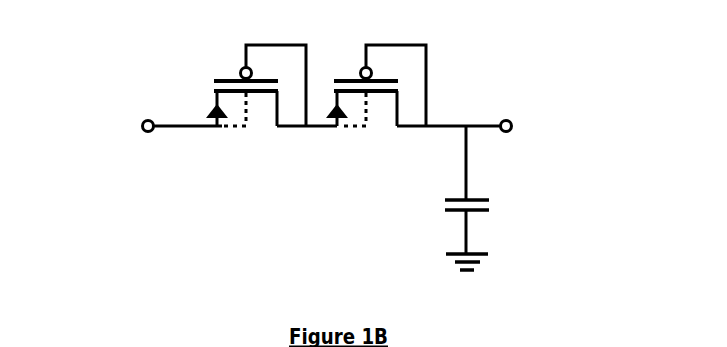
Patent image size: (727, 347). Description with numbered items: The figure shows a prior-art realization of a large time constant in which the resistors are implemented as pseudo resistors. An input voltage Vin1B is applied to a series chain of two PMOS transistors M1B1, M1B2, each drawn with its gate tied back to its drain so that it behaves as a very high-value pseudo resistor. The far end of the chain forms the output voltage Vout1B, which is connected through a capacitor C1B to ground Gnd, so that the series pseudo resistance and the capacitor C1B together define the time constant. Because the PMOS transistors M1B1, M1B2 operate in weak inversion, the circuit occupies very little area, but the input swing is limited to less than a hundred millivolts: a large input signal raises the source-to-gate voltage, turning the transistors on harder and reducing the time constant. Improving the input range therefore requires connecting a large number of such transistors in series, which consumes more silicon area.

The input voltage Vin1B is at (134, 122).
The PMOS transistor M1B1 is at (270, 107).
The PMOS transistor M1B2 is at (374, 107).
The output voltage Vout1B is at (513, 122).
The capacitor C1B is at (500, 190).
The ground Gnd is at (467, 280).